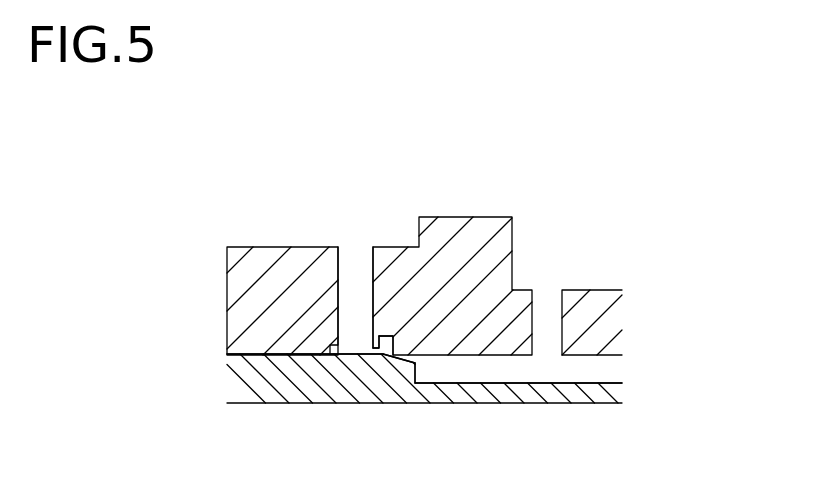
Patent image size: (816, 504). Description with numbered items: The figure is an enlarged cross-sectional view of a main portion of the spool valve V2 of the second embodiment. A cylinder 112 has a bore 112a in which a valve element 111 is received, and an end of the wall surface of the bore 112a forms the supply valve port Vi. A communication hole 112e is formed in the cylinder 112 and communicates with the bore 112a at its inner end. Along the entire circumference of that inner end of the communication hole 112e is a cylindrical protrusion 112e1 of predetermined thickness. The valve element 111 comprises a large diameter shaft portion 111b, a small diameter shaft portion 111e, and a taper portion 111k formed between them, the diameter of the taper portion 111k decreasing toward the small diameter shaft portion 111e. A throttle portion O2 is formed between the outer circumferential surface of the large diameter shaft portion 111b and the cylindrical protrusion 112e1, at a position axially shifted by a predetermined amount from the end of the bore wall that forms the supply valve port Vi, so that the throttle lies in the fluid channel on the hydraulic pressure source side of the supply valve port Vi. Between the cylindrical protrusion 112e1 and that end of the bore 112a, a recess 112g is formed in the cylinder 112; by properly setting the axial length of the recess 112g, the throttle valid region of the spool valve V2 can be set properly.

The cylinder 112 is at (240, 256).
The communication hole 112e is at (345, 261).
The recess 112g is at (376, 346).
The bore 112a is at (473, 355).
The supply valve port Vi is at (380, 348).
The cylindrical protrusion 112e1 is at (377, 353).
The throttle portion O2 is at (378, 355).
The valve element 111 is at (270, 393).
The large diameter shaft portion 111b is at (243, 354).
The taper portion 111k is at (410, 364).
The small diameter shaft portion 111e is at (592, 383).
The spool valve V2 is at (545, 418).